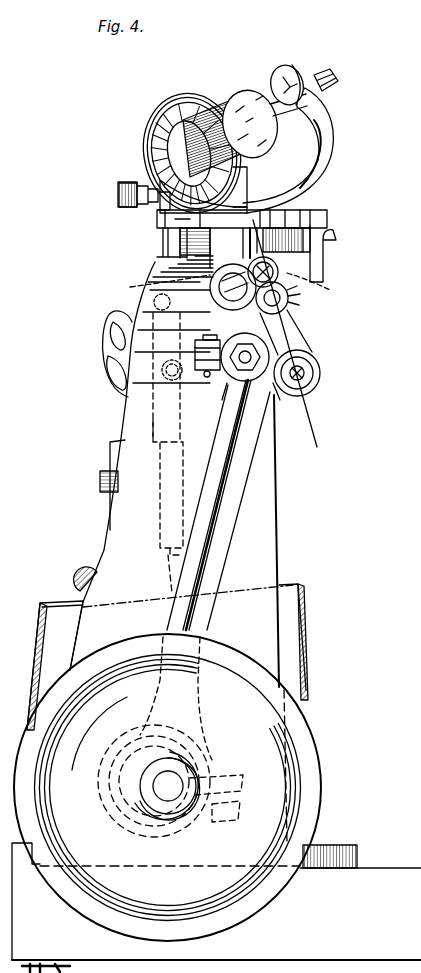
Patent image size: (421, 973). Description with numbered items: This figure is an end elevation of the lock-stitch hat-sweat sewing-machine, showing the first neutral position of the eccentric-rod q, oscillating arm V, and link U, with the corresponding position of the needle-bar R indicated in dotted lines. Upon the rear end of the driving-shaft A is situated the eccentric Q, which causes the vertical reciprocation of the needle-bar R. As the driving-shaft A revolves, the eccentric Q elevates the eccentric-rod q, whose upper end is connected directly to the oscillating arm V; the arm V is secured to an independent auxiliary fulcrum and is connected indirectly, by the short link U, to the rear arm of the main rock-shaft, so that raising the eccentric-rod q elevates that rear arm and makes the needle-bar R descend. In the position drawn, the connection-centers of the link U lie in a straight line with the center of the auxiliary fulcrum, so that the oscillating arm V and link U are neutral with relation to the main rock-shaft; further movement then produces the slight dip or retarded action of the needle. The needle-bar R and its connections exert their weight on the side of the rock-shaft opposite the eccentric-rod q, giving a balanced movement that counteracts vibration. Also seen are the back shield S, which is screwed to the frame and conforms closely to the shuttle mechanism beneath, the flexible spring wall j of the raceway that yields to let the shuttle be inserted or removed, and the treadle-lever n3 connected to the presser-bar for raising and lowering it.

The needle-bar R is at (180, 410).
The treadle-lever n3 is at (330, 254).
The link U is at (230, 285).
The oscillating arm V is at (290, 353).
The set screw Z is at (104, 485).
The eccentric-rod q is at (218, 505).
The knob H is at (85, 579).
The back shield S is at (166, 657).
The flexible upper wall or spring j is at (304, 651).
The eccentric Q is at (154, 781).
The driving-shaft A is at (168, 786).